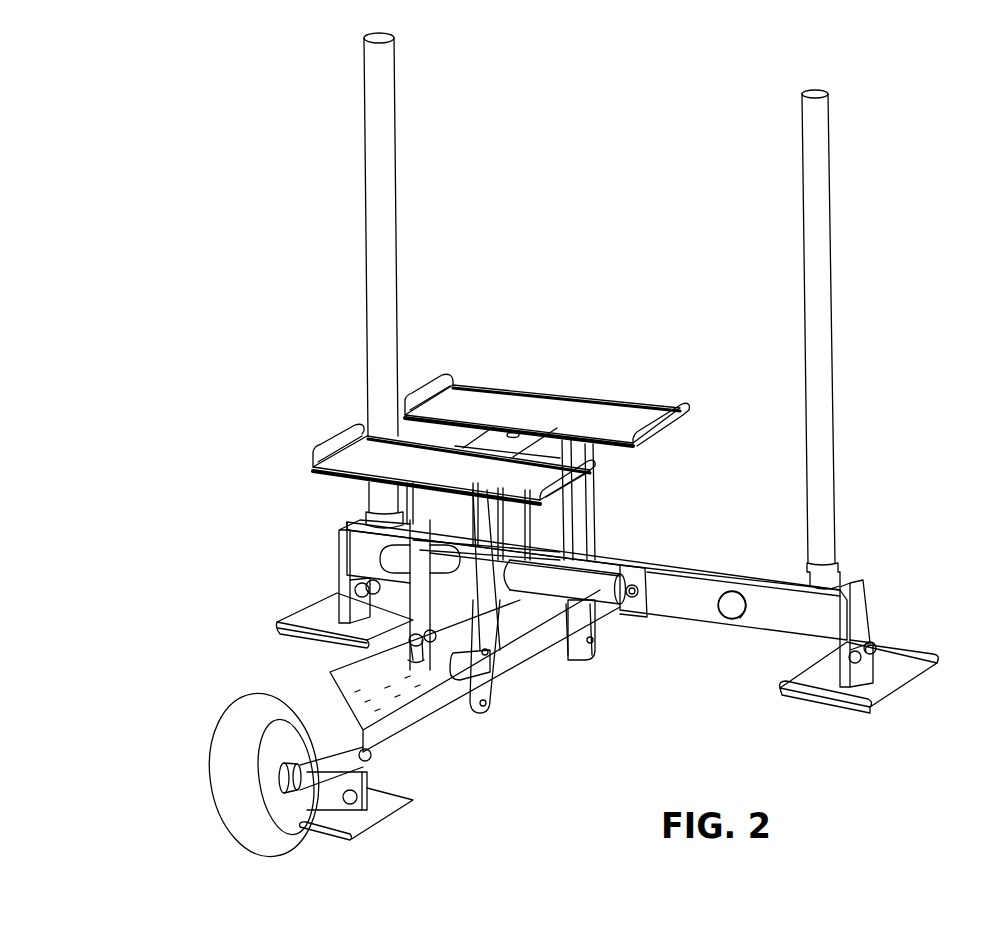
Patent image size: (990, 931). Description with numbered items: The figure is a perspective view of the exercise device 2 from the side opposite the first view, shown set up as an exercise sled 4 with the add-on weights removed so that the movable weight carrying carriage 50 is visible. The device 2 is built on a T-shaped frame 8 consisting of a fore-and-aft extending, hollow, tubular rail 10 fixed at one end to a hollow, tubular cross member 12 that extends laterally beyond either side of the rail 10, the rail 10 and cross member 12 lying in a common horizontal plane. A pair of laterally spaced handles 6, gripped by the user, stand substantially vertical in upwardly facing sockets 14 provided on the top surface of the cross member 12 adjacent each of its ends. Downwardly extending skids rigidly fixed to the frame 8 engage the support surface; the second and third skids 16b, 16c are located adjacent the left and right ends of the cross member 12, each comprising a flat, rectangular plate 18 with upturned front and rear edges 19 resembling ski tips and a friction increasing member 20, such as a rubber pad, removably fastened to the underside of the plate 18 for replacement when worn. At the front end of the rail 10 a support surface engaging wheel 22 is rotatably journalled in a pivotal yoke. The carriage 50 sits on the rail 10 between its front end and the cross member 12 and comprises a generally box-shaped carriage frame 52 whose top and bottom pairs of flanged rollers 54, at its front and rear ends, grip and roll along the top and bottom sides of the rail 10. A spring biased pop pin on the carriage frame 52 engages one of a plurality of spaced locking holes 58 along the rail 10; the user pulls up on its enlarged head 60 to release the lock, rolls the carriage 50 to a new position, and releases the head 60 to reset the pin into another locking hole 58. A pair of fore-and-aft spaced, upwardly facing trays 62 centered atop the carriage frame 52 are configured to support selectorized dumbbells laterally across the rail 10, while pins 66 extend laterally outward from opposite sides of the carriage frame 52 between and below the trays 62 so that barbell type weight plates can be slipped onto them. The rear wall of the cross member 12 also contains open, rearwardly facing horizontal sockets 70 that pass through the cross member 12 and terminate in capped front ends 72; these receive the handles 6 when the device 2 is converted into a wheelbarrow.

The exercise device 2 is at (712, 142).
The exercise sled 4 is at (268, 680).
The handles 6 is at (373, 165).
The T-shaped frame 8 is at (708, 652).
The rail 10 is at (425, 712).
The cross member 12 is at (812, 619).
The socket 14 is at (370, 518).
The second skid 16b is at (867, 666).
The third skid 16c is at (305, 592).
The flat plate 18 is at (885, 680).
The upturned edges 19 is at (790, 688).
The friction increasing member 20 is at (850, 712).
The wheel 22 is at (222, 777).
The carriage 50 is at (613, 396).
The carriage frame 52 is at (595, 516).
The flanged rollers 54 is at (455, 617).
The locking holes 58 is at (355, 700).
The enlarged head 60 is at (410, 645).
The trays 62 is at (367, 457).
The pins 66 is at (390, 562).
The horizontal sockets 70 is at (745, 596).
The capped front ends 72 is at (727, 611).